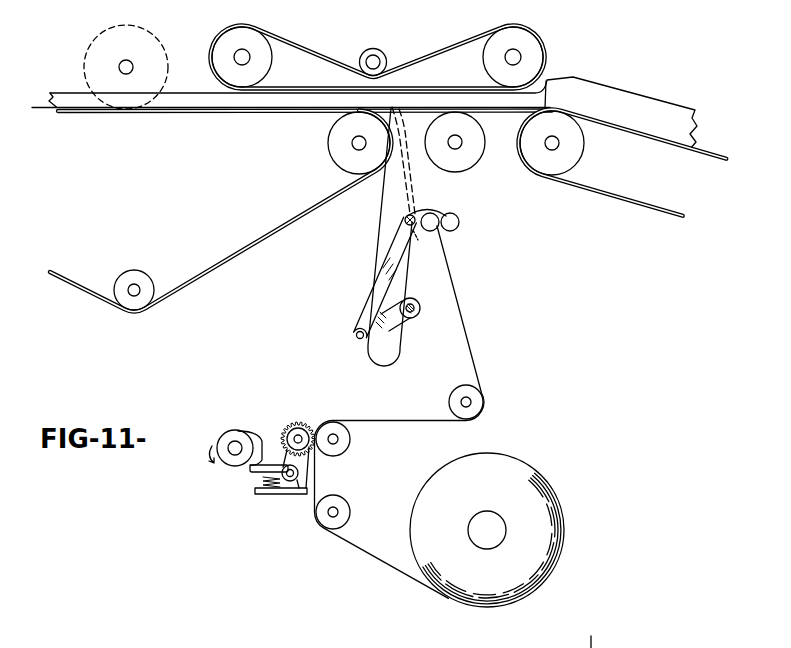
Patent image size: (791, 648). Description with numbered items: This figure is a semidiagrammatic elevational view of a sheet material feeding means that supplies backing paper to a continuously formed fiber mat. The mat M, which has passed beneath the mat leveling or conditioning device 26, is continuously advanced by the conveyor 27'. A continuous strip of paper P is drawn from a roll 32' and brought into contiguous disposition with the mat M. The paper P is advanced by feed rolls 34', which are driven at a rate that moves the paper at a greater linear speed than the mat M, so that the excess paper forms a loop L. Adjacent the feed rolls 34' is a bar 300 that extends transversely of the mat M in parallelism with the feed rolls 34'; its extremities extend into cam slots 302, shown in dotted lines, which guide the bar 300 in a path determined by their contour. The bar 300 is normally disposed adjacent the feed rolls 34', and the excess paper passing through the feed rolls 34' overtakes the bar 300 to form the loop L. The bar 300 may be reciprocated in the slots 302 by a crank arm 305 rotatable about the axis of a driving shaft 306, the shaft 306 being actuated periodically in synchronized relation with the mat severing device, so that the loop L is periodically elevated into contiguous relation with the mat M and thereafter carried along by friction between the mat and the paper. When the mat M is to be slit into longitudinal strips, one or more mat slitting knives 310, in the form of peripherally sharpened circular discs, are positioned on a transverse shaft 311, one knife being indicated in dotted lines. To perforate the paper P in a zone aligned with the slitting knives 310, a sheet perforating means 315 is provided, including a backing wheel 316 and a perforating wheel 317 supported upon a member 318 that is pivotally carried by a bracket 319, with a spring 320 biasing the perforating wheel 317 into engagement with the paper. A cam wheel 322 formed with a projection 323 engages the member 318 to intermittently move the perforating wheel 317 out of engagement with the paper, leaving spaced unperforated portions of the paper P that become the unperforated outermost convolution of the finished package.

The mat leveling or conditioning device 26 is at (553, 31).
The mat M is at (197, 80).
The mat slitting knife 310 is at (100, 41).
The transverse shaft 311 is at (119, 67).
The conveyor 27' is at (220, 211).
The cam slot 302 is at (408, 190).
The bar 300 is at (405, 219).
The feed rolls 34' is at (464, 219).
The loop L is at (370, 360).
The crank arm 305 is at (396, 333).
The driving shaft 306 is at (413, 311).
The paper P is at (461, 270).
The backing wheel 316 is at (350, 444).
The roll 32' is at (496, 530).
The sheet perforating means 315 is at (302, 411).
The perforating wheel 317 is at (306, 426).
The bracket 319 is at (287, 495).
The member 318 is at (252, 470).
The spring 320 is at (262, 479).
The cam wheel 322 is at (228, 424).
The projection 323 is at (261, 436).